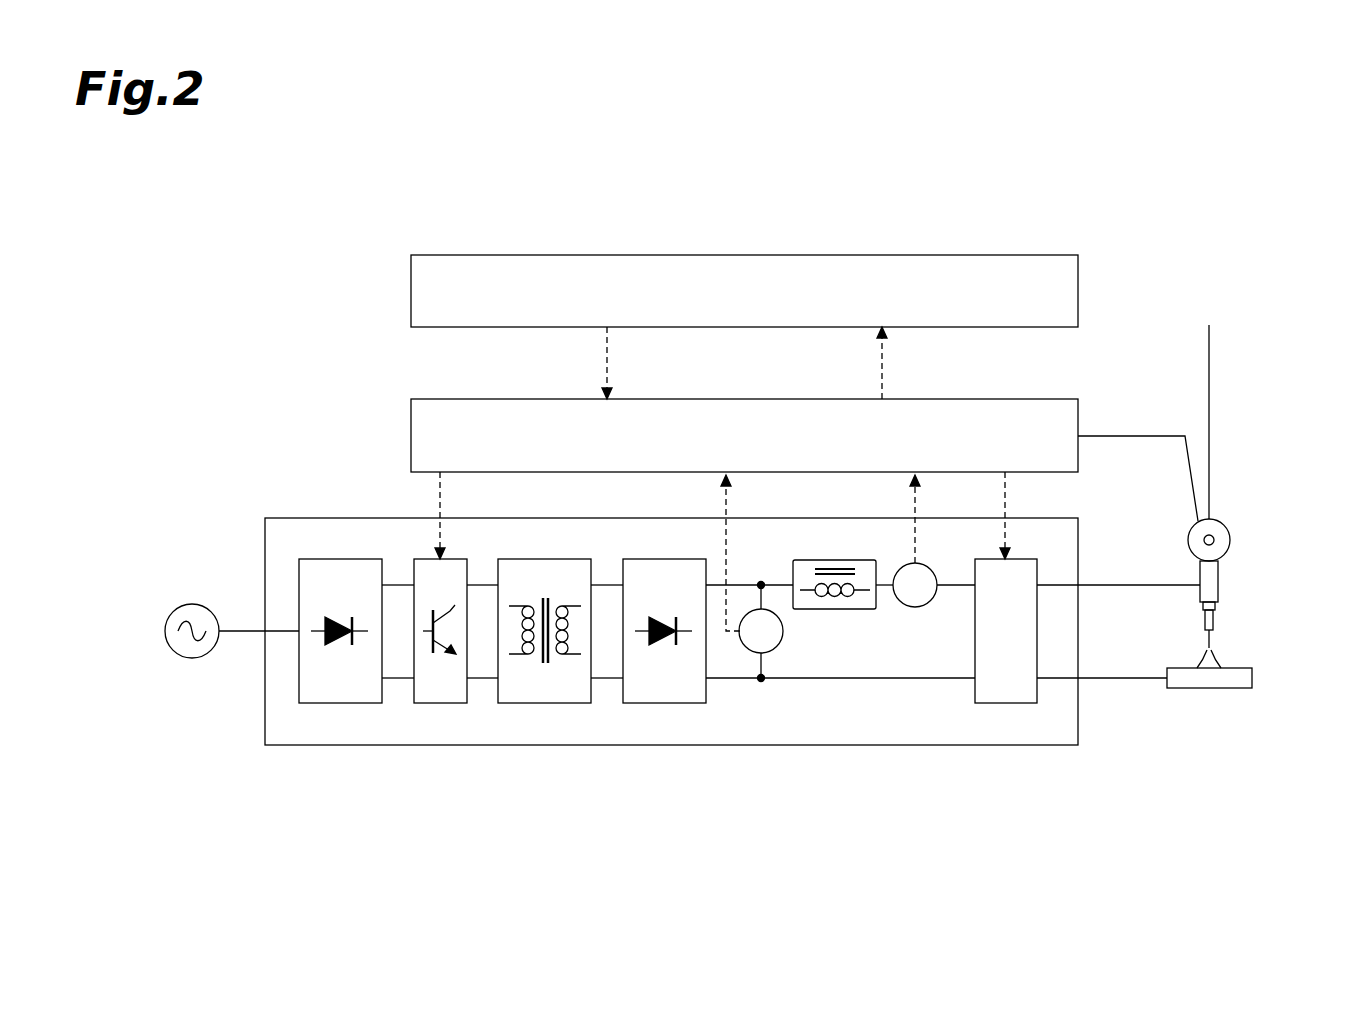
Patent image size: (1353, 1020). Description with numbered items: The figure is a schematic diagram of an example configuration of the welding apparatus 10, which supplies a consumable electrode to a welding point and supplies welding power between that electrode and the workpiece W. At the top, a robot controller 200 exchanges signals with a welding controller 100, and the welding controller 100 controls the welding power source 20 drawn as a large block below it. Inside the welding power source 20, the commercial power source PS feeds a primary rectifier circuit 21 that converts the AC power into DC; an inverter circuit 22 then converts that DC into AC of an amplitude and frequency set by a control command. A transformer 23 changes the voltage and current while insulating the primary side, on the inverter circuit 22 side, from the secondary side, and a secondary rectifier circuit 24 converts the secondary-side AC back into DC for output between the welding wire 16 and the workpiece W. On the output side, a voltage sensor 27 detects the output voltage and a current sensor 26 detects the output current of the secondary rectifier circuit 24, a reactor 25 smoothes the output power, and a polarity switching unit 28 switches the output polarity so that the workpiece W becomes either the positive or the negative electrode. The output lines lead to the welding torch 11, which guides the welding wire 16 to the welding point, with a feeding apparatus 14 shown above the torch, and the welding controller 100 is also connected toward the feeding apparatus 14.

The welding apparatus 10 is at (947, 207).
The robot controller 200 is at (411, 290).
The welding controller 100 is at (411, 435).
The welding power source 20 is at (265, 535).
The primary rectifier circuit 21 is at (338, 703).
The inverter circuit 22 is at (444, 703).
The transformer 23 is at (550, 703).
The secondary rectifier circuit 24 is at (665, 703).
The reactor 25 is at (835, 609).
The current sensor 26 is at (918, 607).
The voltage sensor 27 is at (771, 653).
The polarity switching unit 28 is at (1005, 703).
The feeding apparatus 14 is at (1231, 532).
The welding torch 11 is at (1228, 580).
The welding wire 16 is at (1215, 635).
The workpiece W is at (1252, 680).
The commercial power source PS is at (165, 631).